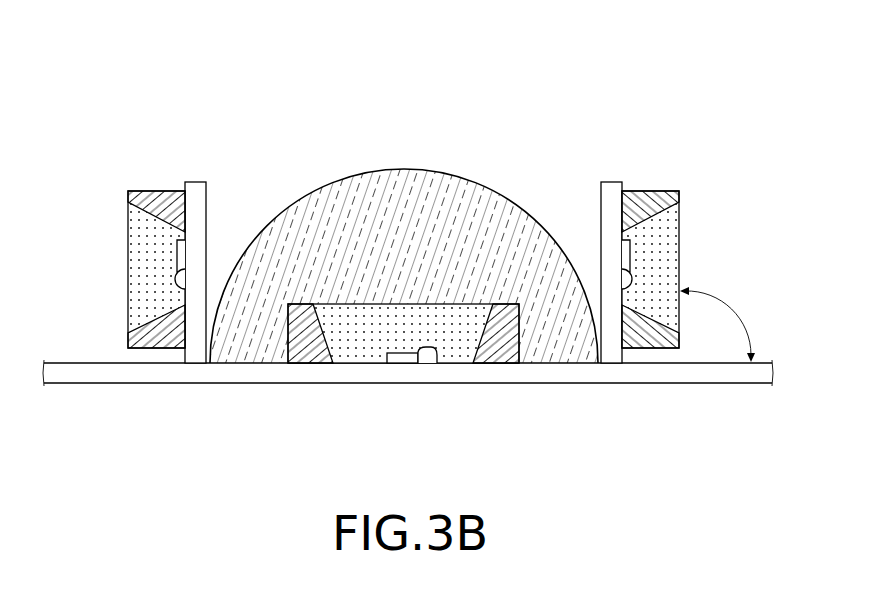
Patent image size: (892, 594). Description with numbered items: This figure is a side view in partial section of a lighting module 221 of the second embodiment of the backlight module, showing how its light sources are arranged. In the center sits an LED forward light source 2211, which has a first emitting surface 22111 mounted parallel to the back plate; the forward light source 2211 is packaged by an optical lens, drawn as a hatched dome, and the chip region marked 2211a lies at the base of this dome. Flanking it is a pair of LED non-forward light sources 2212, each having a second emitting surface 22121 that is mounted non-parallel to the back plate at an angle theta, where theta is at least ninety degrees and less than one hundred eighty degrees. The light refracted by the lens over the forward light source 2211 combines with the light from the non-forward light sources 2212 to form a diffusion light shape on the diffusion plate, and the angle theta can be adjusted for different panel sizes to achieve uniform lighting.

The light emitting unit 221 is at (75, 74).
The LED forward light source 2211 is at (268, 206).
The first emitting surface 22111 is at (477, 303).
The reflective cup 2211a is at (477, 346).
The LED non-forward light source 2212 is at (117, 346).
The second emitting surface 22121 is at (681, 227).